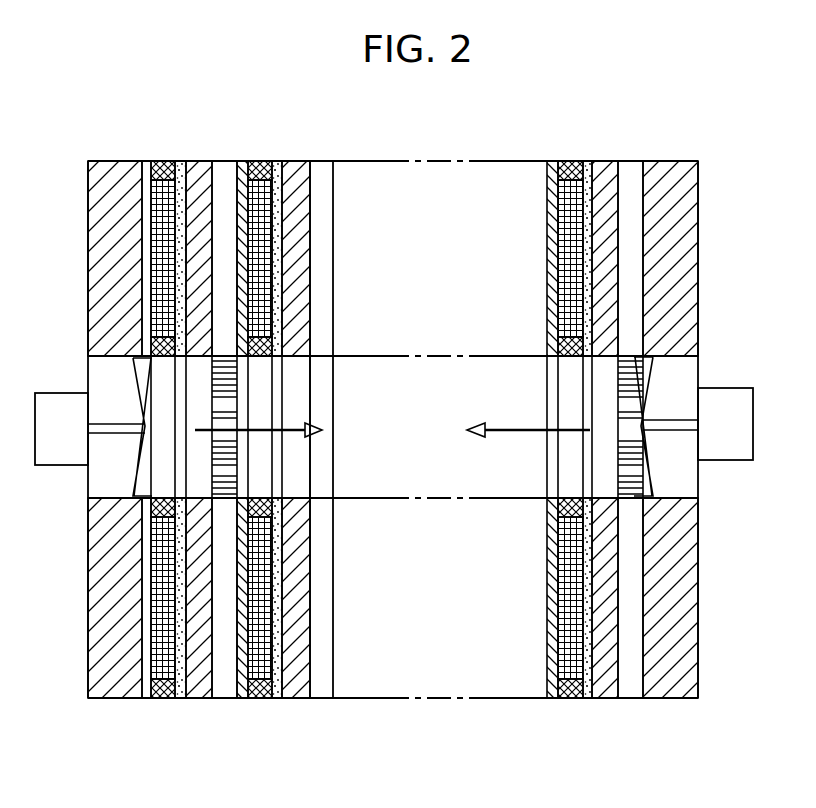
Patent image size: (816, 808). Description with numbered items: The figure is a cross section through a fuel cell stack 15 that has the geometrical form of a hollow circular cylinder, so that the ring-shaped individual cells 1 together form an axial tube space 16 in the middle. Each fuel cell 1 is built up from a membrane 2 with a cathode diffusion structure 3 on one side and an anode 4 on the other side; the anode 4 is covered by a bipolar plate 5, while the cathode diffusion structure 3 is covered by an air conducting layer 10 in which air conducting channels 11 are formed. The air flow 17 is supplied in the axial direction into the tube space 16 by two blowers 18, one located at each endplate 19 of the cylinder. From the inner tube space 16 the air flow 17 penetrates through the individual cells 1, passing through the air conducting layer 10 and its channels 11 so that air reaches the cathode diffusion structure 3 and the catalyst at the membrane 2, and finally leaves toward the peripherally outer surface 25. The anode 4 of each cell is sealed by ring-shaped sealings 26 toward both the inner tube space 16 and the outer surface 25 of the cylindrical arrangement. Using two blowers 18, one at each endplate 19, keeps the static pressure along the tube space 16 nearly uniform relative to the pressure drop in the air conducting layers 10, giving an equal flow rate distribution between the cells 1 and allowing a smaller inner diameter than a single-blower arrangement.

The fuel cell 1 is at (247, 158).
The membrane 2 is at (180, 698).
The cathode diffusion structure 3 is at (203, 698).
The anode 4 is at (160, 698).
The bipolar plate 5 is at (150, 698).
The air conducting layer 10 is at (233, 698).
The air conducting channels 11 is at (237, 372).
The fuel cell stack 15 is at (552, 96).
The tube space 16 is at (440, 417).
The air flow 17 is at (300, 436).
The blower 18 is at (135, 478).
The endplate 19 is at (105, 178).
The outer surface 25 is at (320, 162).
The sealings 26 is at (262, 160).